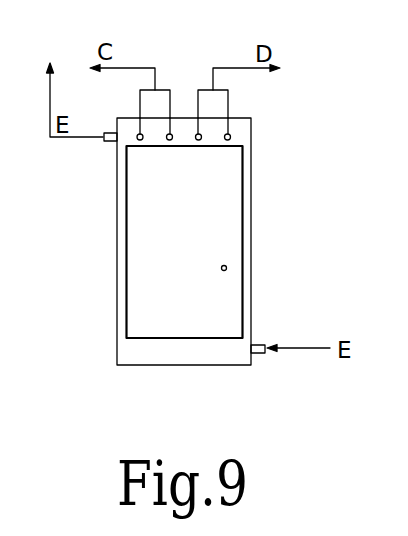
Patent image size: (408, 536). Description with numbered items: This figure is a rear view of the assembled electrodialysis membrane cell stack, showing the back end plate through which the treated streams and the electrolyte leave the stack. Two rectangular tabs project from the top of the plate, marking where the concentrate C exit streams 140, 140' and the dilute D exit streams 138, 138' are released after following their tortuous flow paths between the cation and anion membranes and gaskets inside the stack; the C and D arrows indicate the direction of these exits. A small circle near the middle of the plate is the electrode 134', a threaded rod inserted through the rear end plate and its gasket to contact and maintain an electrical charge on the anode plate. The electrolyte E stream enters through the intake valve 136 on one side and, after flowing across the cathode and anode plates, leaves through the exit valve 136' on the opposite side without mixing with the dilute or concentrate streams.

The electrode 134' is at (282, 267).
The intake valve 136 is at (303, 322).
The exit valve 136' is at (75, 173).
The dilute D exit stream 138 is at (225, 70).
The dilute D exit stream 138' is at (272, 113).
The concentrate C exit stream 140 is at (106, 77).
The concentrate C exit stream 140' is at (187, 70).